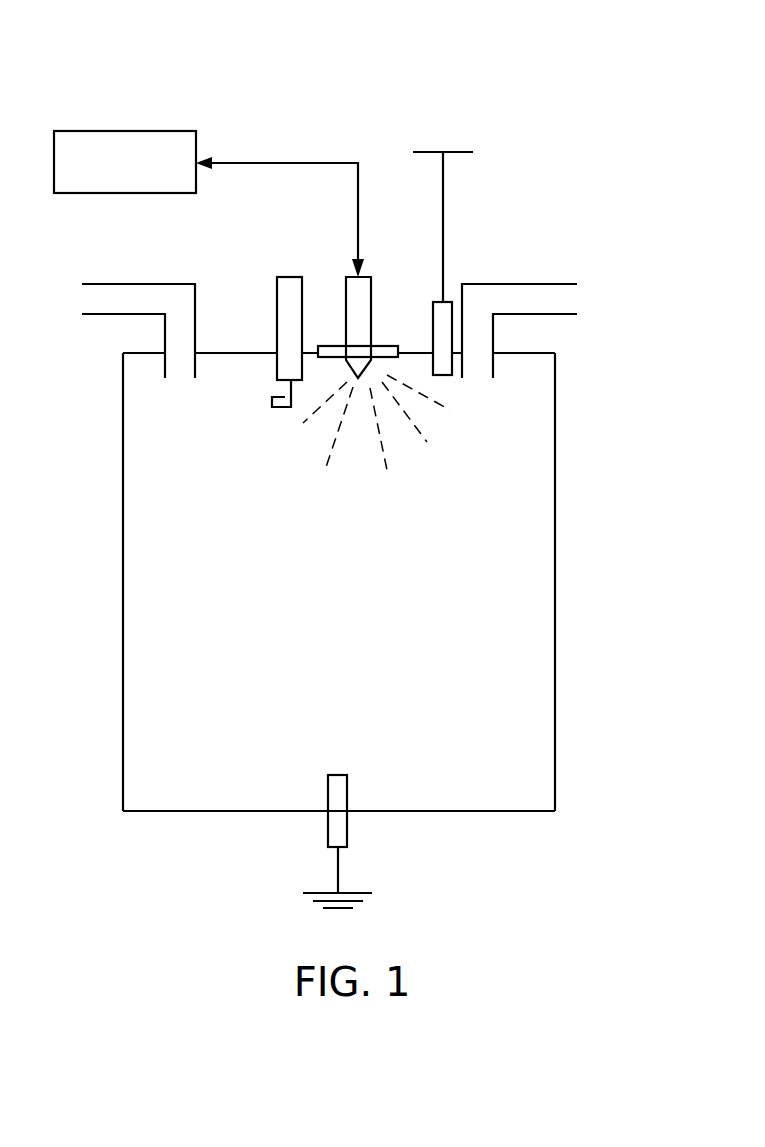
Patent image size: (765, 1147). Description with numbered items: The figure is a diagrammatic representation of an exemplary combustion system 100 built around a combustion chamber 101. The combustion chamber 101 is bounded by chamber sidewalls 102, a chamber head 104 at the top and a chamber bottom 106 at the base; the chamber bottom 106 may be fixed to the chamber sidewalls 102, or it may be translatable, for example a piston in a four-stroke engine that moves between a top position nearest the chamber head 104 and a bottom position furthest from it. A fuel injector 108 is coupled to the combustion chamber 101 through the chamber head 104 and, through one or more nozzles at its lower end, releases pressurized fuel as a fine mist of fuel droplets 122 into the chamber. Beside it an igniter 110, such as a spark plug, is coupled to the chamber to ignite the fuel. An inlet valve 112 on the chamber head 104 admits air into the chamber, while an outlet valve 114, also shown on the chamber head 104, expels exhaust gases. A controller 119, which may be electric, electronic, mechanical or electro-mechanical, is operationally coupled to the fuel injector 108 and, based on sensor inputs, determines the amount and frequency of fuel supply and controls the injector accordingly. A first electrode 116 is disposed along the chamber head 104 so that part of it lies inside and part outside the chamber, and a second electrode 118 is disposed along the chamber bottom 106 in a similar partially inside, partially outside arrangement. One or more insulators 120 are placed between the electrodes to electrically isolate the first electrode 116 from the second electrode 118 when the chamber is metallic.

The combustion system 100 is at (598, 58).
The combustion chamber 101 is at (565, 373).
The chamber sidewalls 102 is at (555, 464).
The chamber head 104 is at (225, 353).
The chamber bottom 106 is at (523, 811).
The fuel injector 108 is at (364, 277).
The igniter 110 is at (290, 277).
The inlet valve 112 is at (120, 284).
The outlet valve 114 is at (518, 284).
The first electrode 116 is at (443, 180).
The second electrode 118 is at (338, 868).
The controller 119 is at (120, 131).
The insulator 120 is at (388, 346).
The fuel droplets 122 is at (382, 445).